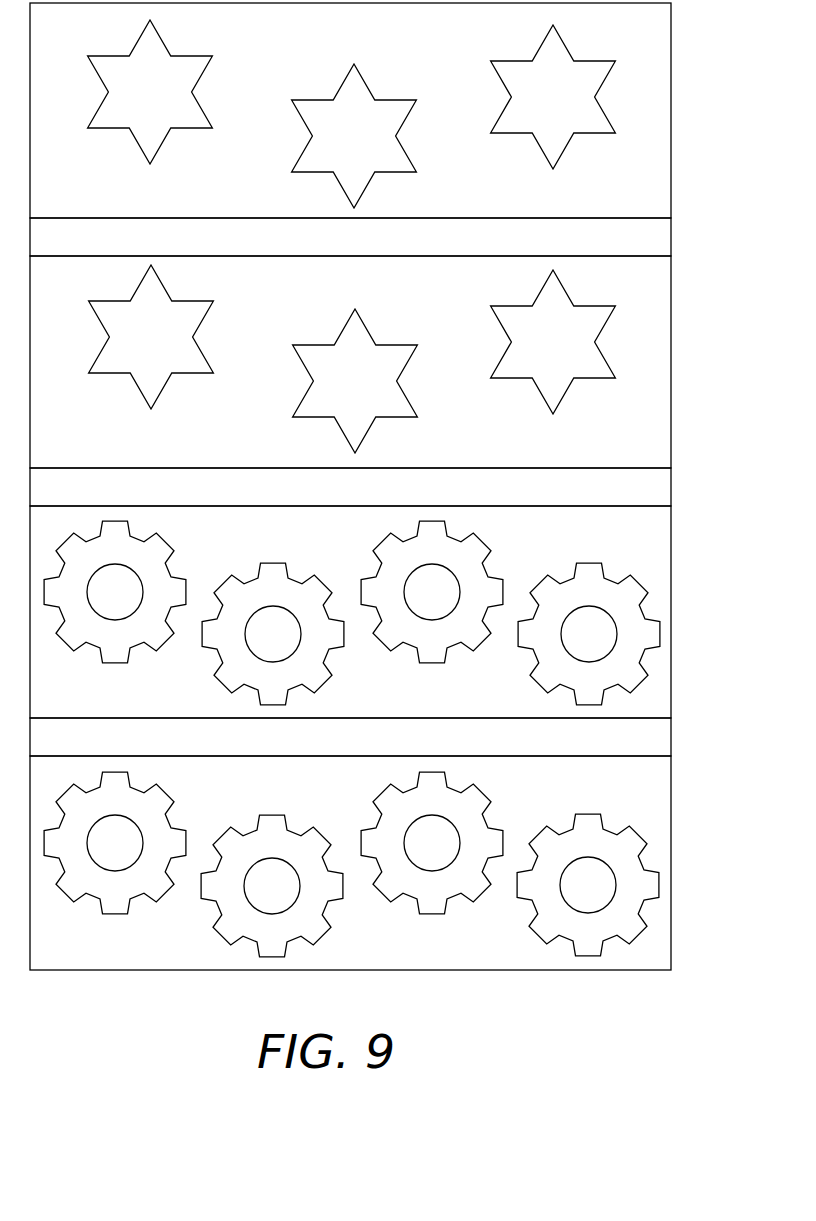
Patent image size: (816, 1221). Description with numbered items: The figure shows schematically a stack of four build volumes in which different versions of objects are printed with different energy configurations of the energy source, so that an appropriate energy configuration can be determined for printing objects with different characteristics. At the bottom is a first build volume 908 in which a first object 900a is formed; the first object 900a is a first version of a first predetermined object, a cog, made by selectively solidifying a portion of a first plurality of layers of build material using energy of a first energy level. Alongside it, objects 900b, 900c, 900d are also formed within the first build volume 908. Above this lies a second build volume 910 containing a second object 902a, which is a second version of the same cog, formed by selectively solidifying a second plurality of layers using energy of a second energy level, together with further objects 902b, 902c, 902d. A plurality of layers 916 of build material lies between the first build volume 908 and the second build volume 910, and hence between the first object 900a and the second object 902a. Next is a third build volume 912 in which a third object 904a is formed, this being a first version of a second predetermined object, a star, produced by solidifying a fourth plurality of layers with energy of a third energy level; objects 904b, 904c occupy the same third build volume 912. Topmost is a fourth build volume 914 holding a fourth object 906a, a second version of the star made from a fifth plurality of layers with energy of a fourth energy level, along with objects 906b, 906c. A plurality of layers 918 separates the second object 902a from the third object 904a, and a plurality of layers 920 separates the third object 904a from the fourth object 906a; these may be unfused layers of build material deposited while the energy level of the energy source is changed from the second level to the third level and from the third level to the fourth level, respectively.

The first object 900a is at (165, 812).
The object 900b is at (268, 814).
The object 900c is at (482, 812).
The object 900d is at (582, 813).
The second object 902a is at (165, 562).
The object 902b is at (268, 563).
The object 902c is at (482, 560).
The object 902d is at (583, 562).
The third object 904a is at (177, 303).
The object 904b is at (382, 347).
The object 904c is at (578, 307).
The fourth object 906a is at (177, 57).
The object 906b is at (380, 98).
The object 906c is at (578, 60).
The first build volume 908 is at (671, 845).
The second build volume 910 is at (671, 548).
The third build volume 912 is at (671, 363).
The fourth build volume 914 is at (671, 113).
The plurality of layers 916 is at (671, 742).
The plurality of layers 918 is at (671, 493).
The plurality of layers 920 is at (671, 243).